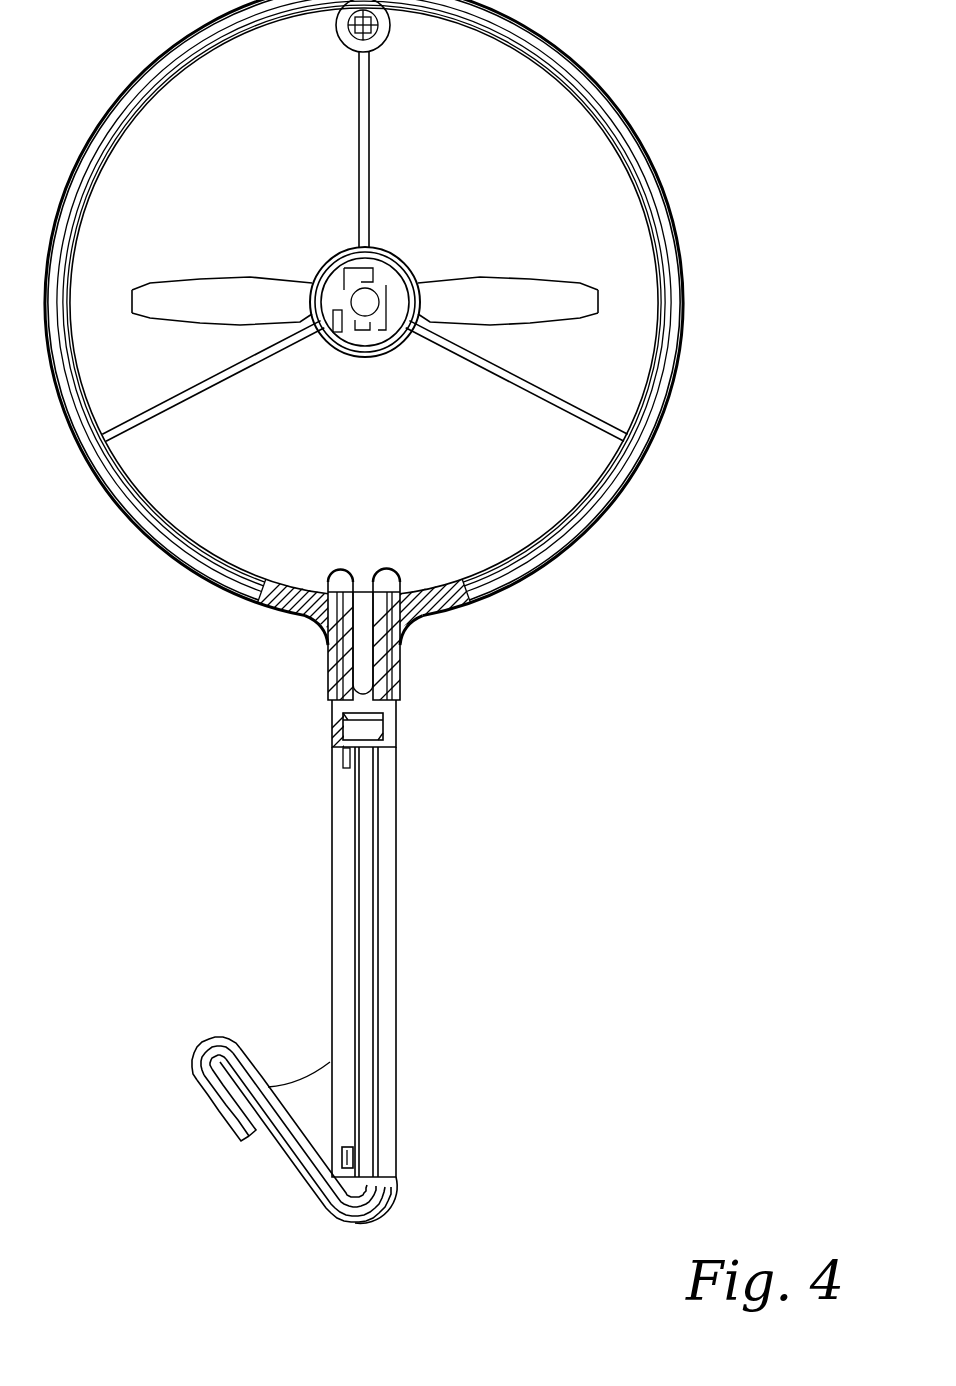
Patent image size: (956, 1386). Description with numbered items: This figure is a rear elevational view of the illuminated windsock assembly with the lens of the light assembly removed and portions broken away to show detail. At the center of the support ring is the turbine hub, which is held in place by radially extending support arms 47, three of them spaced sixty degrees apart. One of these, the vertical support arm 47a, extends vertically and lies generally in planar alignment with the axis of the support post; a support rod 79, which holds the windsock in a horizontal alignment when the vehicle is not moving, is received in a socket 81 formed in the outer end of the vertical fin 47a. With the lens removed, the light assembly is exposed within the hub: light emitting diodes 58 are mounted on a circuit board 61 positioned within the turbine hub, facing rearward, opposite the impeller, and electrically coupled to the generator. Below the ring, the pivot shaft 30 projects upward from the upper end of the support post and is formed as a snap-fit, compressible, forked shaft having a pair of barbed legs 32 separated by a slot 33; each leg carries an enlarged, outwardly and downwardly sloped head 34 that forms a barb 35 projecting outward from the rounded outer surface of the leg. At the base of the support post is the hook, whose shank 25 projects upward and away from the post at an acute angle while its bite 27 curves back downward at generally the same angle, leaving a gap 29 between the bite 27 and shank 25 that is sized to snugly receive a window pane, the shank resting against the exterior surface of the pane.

The shank 25 is at (242, 1032).
The bite 27 is at (213, 1072).
The gap 29 is at (258, 1128).
The pivot shaft 30 is at (380, 665).
The barbed legs 32 is at (343, 670).
The slot 33 is at (370, 583).
The head 34 is at (340, 568).
The barb 35 is at (328, 630).
The support arms 47 is at (203, 393).
The vertical support arm 47a is at (370, 125).
The light emitting diodes 58 is at (392, 262).
The circuit board 61 is at (372, 345).
The support rod 79 is at (348, 38).
The socket 81 is at (382, 33).